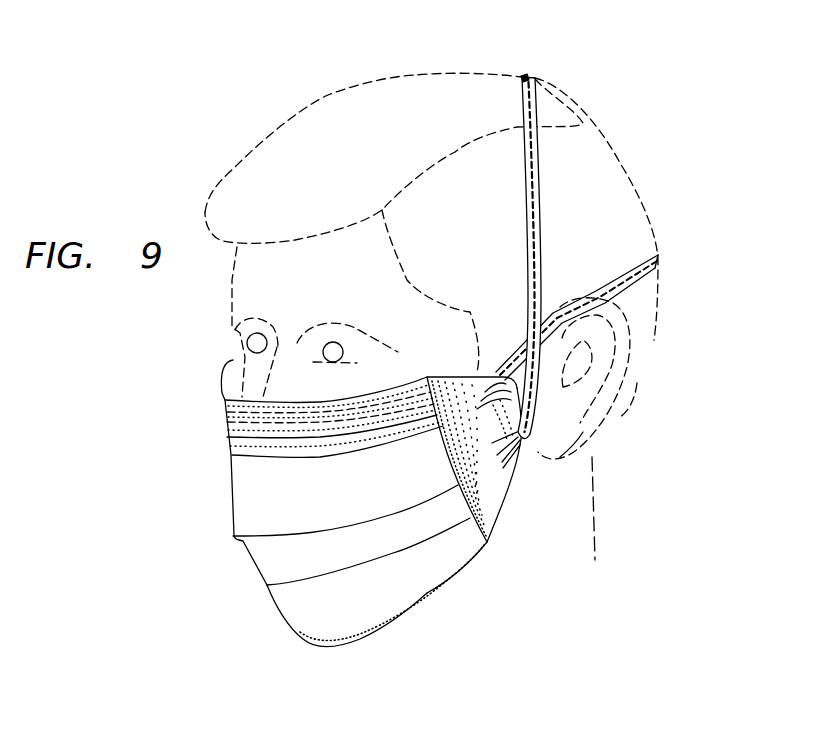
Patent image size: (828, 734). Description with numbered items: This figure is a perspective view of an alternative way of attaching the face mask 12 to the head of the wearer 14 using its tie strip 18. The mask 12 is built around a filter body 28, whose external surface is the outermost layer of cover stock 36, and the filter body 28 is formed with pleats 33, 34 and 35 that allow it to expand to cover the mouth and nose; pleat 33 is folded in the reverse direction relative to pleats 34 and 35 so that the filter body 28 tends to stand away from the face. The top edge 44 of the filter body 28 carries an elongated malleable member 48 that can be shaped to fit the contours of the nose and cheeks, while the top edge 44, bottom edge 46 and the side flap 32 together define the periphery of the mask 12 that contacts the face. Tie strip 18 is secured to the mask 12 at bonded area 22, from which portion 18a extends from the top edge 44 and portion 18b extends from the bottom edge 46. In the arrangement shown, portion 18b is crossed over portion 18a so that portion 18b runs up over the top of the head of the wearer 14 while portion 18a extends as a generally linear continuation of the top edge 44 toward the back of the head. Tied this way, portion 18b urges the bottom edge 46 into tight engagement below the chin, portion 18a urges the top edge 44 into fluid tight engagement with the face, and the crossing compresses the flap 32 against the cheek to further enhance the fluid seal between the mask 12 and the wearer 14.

The face mask 12 is at (357, 511).
The wearer 14 is at (620, 165).
The tie strip 18 is at (559, 227).
The portion of tie strip 18a is at (660, 262).
The portion of tie strip 18b is at (528, 76).
The bonded area 22 is at (523, 433).
The filter body 28 is at (330, 632).
The flap 32 is at (497, 500).
The pleat 33 is at (250, 456).
The pleat 34 is at (320, 535).
The pleat 35 is at (297, 585).
The cover stock 36 is at (453, 563).
The top edge 44 is at (404, 386).
The bottom edge 46 is at (404, 612).
The malleable member 48 is at (284, 412).